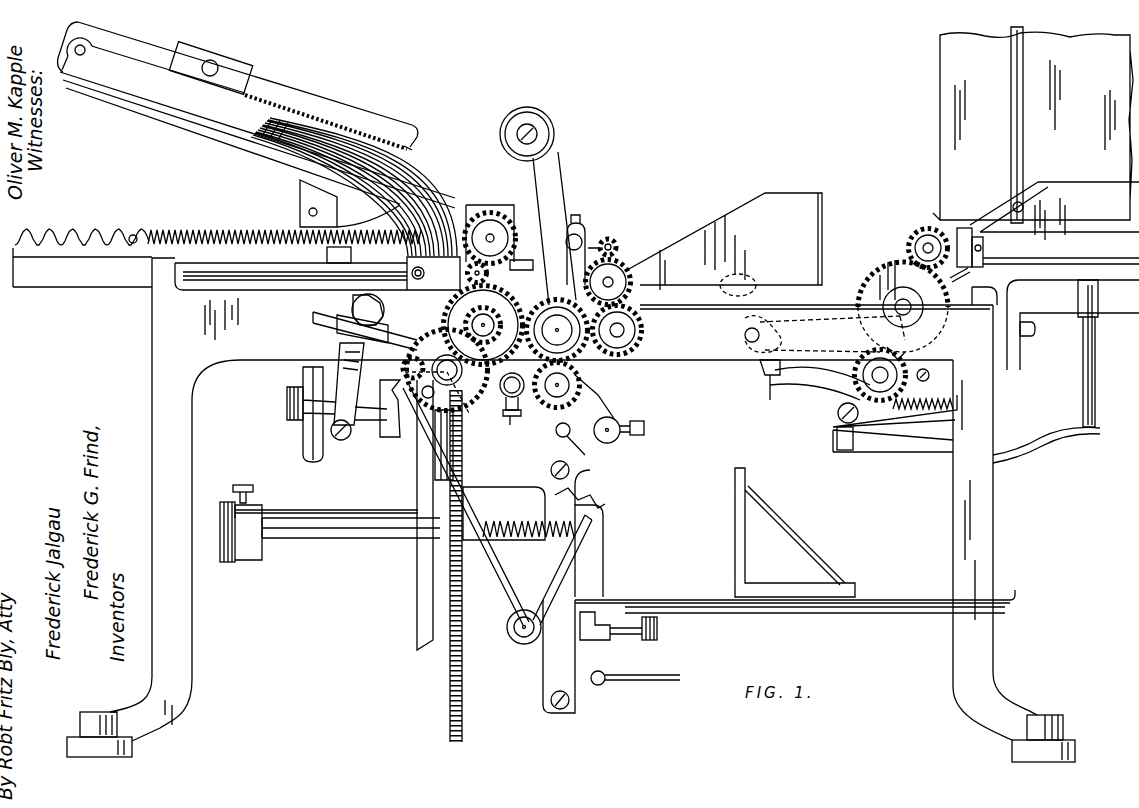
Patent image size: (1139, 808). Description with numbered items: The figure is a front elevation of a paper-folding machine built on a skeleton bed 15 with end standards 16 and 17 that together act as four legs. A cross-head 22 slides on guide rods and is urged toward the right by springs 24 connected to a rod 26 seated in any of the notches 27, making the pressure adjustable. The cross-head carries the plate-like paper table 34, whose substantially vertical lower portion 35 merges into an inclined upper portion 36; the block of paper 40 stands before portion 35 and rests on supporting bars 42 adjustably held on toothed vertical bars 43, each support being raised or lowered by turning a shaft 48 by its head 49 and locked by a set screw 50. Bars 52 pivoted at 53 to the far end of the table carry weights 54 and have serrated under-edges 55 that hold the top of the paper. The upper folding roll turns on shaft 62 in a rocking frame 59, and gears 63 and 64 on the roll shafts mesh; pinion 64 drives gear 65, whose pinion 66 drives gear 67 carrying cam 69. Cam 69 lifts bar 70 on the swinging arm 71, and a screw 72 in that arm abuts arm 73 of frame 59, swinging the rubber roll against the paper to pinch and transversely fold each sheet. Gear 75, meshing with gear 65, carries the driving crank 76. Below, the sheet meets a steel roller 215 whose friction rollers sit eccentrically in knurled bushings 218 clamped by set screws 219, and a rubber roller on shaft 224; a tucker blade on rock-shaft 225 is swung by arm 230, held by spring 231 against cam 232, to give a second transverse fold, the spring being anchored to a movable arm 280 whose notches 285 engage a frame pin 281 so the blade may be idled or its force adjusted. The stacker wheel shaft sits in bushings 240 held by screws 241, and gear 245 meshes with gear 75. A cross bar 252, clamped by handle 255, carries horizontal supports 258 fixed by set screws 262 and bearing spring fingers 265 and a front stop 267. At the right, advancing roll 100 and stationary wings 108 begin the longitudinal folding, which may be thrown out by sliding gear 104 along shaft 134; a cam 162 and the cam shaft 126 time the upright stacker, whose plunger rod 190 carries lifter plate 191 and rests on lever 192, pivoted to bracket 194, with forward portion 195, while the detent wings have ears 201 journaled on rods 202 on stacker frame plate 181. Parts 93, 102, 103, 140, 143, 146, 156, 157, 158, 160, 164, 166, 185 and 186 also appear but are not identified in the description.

The skeleton bed 15 is at (889, 325).
The end standard 16 is at (510, 507).
The end standard 17 is at (1014, 561).
The cross-head 22 is at (82, 267).
The spring 24 is at (252, 226).
The rod 26 is at (133, 234).
The notches 27 is at (78, 232).
The paper table 34 is at (350, 203).
The lower portion of the table 35 is at (420, 575).
The inclined upper portion of the table 36 is at (195, 122).
The block of paper 40 is at (410, 172).
The supporting bars 42 is at (326, 503).
The vertical bars 43 is at (462, 600).
The shaft 48 is at (335, 535).
The head 49 is at (235, 560).
The set screw 50 is at (253, 489).
The bars 52 is at (345, 108).
The pivot 53 is at (92, 58).
The weights 54 is at (238, 66).
The serrated under-edges 55 is at (415, 140).
The rocking frame 59 is at (520, 266).
The shaft 62 is at (492, 234).
The gear 63 is at (481, 215).
The pinion 64 is at (447, 273).
The gear 65 is at (483, 325).
The pinion 66 is at (470, 325).
The gear 67 is at (490, 475).
The cam 69 is at (410, 371).
The bar 70 is at (365, 322).
The swinging arm 71 is at (355, 388).
The screw 72 is at (358, 432).
The arm 73 is at (394, 416).
The gear 75 is at (557, 317).
The driving crank 76 is at (542, 200).
The bracket 93 is at (582, 236).
The advancing roll 100 is at (612, 243).
The pin 102 is at (614, 282).
The gear 103 is at (625, 270).
The gear 104 is at (635, 352).
The stationary wings 108 is at (724, 241).
The shaft 126 is at (748, 340).
The shaft 134 is at (624, 330).
The gear 140 is at (890, 372).
The bracket 143 is at (770, 400).
The block 146 is at (838, 435).
The pinion 156 is at (888, 226).
The gear 157 is at (903, 306).
The arm 158 is at (865, 452).
The screw 160 is at (945, 376).
The cam 162 is at (760, 318).
The lever 164 is at (832, 333).
The pawl 166 is at (892, 348).
The stacker frame plate 181 is at (1054, 211).
The paper sheet 185 is at (1033, 126).
The guide bar 186 is at (1011, 56).
The plunger rod 190 is at (1083, 373).
The lifter plate 191 is at (962, 285).
The lever 192 is at (1025, 438).
The bracket 194 is at (895, 411).
The forward portion of the lever 195 is at (820, 388).
The ears 201 is at (983, 240).
The rods 202 is at (1061, 250).
The roller 215 is at (600, 390).
The bushings 218 is at (514, 391).
The set screws 219 is at (512, 424).
The shaft 224 is at (587, 464).
The rock-shaft 225 is at (524, 635).
The arm 230 is at (470, 518).
The spring 231 is at (528, 540).
The cam 232 is at (446, 373).
The bushings 240 is at (620, 436).
The screws 241 is at (644, 428).
The gear 245 is at (570, 385).
The cross bar 252 is at (608, 640).
The handle 255 is at (645, 682).
The horizontal supports 258 is at (795, 594).
The set screws 262 is at (657, 630).
The spring-like fingers 265 is at (603, 545).
The front stop 267 is at (735, 534).
The movable arm 280 is at (562, 570).
The pin 281 is at (570, 490).
The notches 285 is at (598, 506).